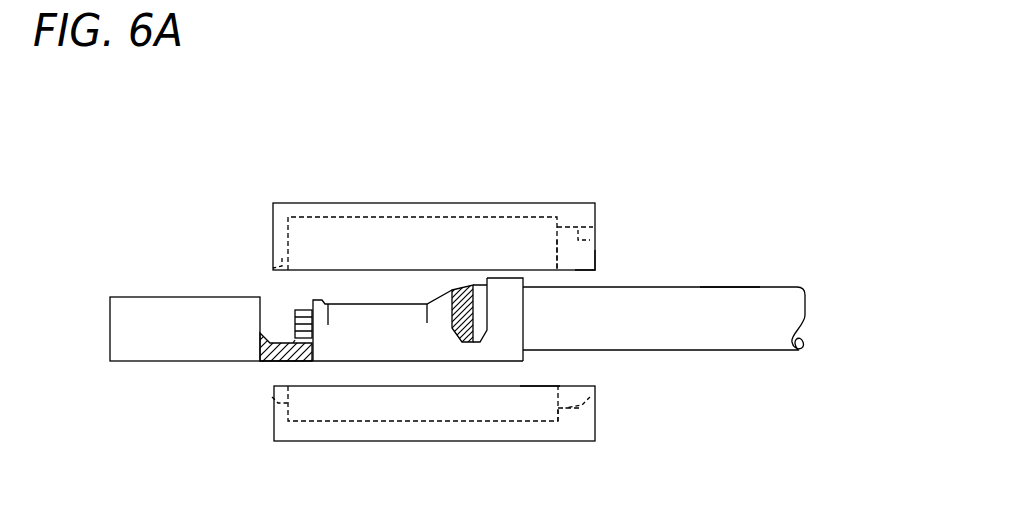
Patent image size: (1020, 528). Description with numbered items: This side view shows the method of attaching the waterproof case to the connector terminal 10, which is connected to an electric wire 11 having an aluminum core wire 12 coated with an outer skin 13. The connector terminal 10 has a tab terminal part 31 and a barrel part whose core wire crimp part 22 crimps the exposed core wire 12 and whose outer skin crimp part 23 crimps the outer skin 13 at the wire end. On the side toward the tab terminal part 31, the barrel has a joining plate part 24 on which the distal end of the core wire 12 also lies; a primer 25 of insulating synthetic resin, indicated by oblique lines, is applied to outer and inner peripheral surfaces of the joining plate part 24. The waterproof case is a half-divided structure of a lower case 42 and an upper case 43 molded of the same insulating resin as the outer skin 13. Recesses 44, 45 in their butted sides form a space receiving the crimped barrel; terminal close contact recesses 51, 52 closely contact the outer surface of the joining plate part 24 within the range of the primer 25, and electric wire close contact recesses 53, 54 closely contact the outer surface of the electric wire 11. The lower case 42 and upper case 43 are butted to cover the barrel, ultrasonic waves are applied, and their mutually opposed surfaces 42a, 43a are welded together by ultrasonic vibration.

The connector terminal 10 is at (240, 254).
The electric wire 11 is at (772, 282).
The core wire 12 is at (459, 300).
The outer skin 13 is at (732, 293).
The core wire crimp part 22 is at (375, 304).
The outer skin crimp part 23 is at (505, 282).
The joining plate part 24 is at (280, 344).
The primer 25 is at (272, 348).
The tab terminal part 31 is at (140, 290).
The lower case 42 is at (585, 432).
The opposed surface of lower case 42a is at (528, 386).
The upper case 43 is at (598, 213).
The opposed surface of upper case 43a is at (592, 279).
The recess of lower case 44 is at (560, 410).
The recess of upper case 45 is at (555, 246).
The terminal close contact recess of lower case 51 is at (272, 397).
The terminal close contact recess of upper case 52 is at (273, 271).
The electric wire close contact recess of lower case 53 is at (590, 397).
The electric wire close contact recess of upper case 54 is at (595, 240).